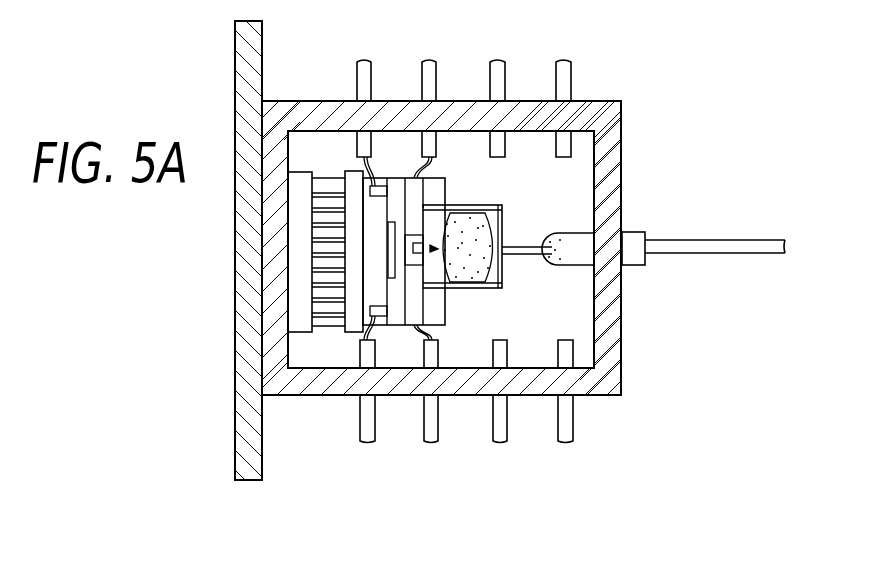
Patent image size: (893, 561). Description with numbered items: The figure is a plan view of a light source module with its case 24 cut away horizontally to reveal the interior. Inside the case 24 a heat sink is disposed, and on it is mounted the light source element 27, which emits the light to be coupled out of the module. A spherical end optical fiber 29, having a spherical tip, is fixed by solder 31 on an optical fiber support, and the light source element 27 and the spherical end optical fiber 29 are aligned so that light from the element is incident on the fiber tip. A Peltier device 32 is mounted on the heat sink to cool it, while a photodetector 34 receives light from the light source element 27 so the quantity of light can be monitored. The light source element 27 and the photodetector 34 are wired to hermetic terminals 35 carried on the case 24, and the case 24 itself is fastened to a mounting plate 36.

The case 24 is at (617, 362).
The light source element 27 is at (438, 247).
The spherical end optical fiber 29 is at (748, 239).
The solder 31 is at (502, 225).
The Peltier device 32 is at (347, 172).
The photodetector 34 is at (397, 221).
The hermetic terminals 35 is at (573, 66).
The mounting plate 36 is at (263, 445).